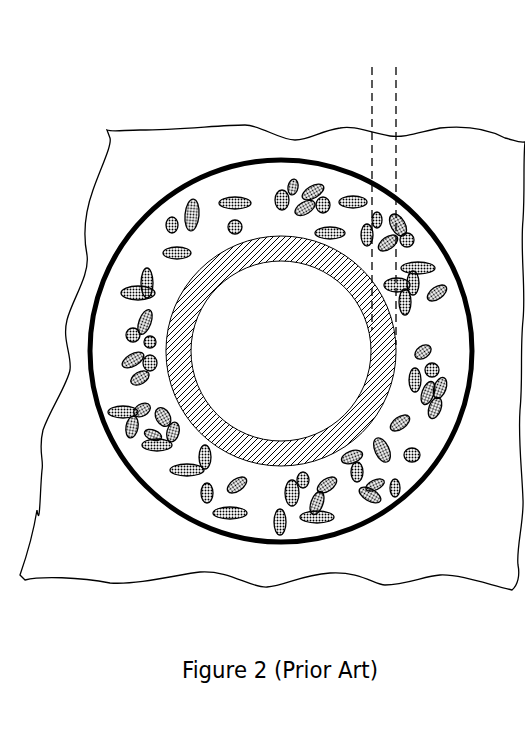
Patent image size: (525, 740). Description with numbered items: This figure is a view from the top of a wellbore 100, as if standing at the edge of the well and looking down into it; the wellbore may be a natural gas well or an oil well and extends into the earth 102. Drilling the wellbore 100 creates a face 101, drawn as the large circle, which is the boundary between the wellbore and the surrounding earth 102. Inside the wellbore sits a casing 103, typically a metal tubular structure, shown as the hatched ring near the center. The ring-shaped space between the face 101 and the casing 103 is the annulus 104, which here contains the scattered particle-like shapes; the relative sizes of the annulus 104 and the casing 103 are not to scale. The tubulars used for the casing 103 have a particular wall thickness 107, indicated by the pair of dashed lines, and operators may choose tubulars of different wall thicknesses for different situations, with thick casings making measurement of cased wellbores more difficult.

The wellbore 100 is at (265, 58).
The face 101 is at (178, 513).
The earth 102 is at (272, 357).
The casing 103 is at (340, 443).
The annulus 104 is at (272, 222).
The wall thickness 107 is at (378, 88).